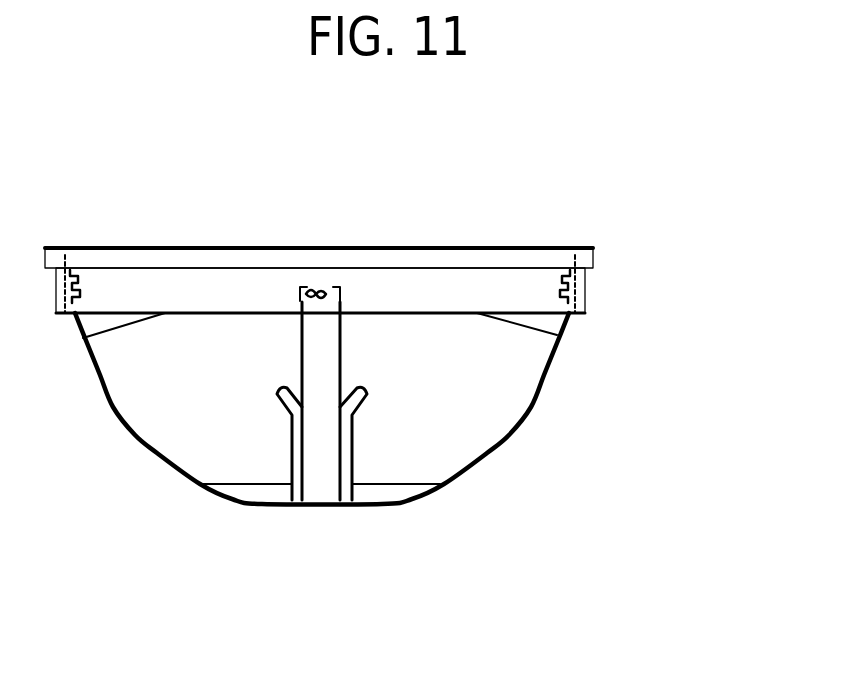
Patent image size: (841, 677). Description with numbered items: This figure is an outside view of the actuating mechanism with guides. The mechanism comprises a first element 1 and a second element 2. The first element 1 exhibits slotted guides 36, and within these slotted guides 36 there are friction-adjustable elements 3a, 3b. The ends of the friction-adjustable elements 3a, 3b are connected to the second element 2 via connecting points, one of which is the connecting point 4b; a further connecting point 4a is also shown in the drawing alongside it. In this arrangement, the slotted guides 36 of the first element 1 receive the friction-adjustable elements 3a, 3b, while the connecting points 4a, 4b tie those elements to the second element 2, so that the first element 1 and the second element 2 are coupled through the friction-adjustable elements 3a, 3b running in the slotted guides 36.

The first element 1 is at (510, 438).
The second element 2 is at (444, 248).
The friction-adjustable element 3a is at (563, 323).
The friction-adjustable element 3b is at (327, 460).
The upper engagement portion 4a is at (313, 294).
The connecting point 4b is at (567, 280).
The slotted guides 36 is at (300, 450).